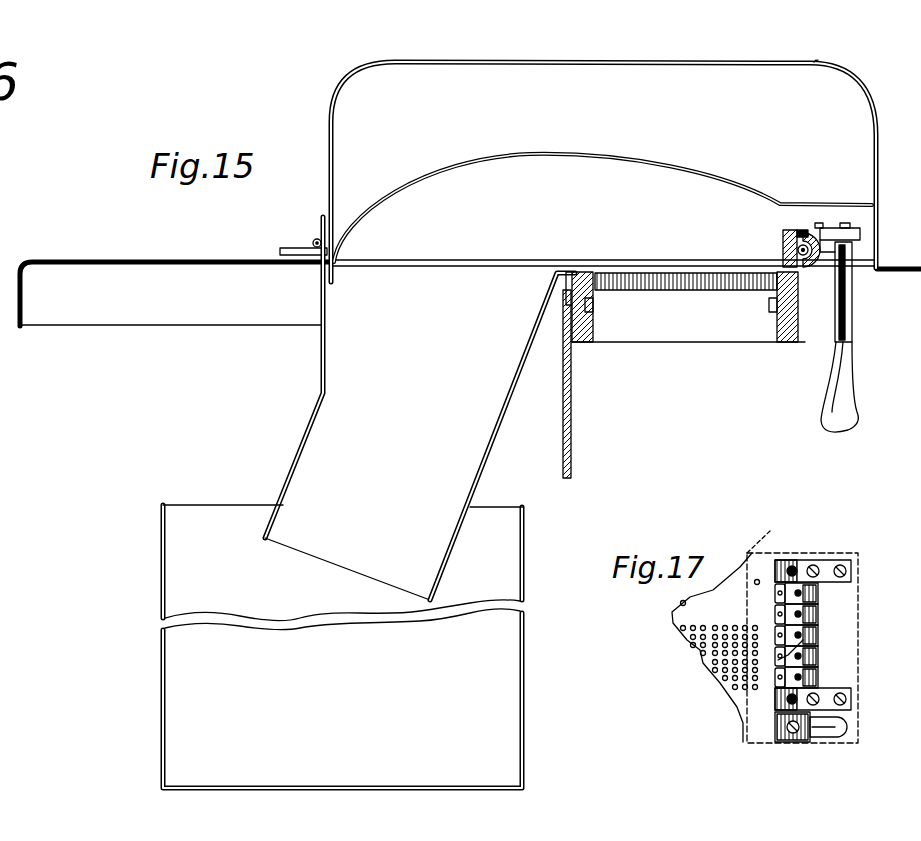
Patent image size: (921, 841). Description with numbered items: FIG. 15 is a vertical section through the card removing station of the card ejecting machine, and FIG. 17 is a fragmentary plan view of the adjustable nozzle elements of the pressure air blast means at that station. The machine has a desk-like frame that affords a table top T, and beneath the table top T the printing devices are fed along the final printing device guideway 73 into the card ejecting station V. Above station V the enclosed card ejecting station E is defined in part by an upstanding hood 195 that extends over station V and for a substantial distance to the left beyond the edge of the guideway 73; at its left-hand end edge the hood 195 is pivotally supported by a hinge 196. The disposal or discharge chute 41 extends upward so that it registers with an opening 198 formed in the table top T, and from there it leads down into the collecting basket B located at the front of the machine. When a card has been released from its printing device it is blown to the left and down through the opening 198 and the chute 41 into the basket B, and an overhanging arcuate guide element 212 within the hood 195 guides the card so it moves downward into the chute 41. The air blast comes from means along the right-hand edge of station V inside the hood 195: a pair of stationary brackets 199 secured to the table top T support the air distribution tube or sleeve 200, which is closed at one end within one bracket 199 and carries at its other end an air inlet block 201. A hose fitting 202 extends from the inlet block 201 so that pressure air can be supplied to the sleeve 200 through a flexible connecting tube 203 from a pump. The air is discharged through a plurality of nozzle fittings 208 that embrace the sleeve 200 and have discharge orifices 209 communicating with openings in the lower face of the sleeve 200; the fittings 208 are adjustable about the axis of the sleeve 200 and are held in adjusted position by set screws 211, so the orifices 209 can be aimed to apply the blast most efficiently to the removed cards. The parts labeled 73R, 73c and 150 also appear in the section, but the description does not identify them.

In FIG. 15, the hood 195 is at (420, 62).
In FIG. 17, the hood 195 is at (765, 631).
In FIG. 15, the hinge 196 is at (313, 240).
In FIG. 15, the opening 198 is at (398, 262).
In FIG. 15, the overhanging arcuate guide element 212 is at (510, 158).
In FIG. 15, the discharge chute 41 is at (308, 419).
In FIG. 15, the final printing device guideway 73 is at (800, 344).
In FIG. 15, the switch housing block 73R is at (585, 270).
In FIG. 15, the contact 73c is at (589, 308).
In FIG. 15, the heating grid 150 is at (650, 272).
In FIG. 15, the nozzle fittings 208 is at (792, 230).
In FIG. 17, the nozzle fittings 208 is at (812, 611).
In FIG. 15, the discharge orifices 209 is at (796, 262).
In FIG. 17, the discharge orifices 209 is at (777, 612).
In FIG. 15, the air distribution tube or sleeve 200 is at (786, 240).
In FIG. 17, the air distribution tube or sleeve 200 is at (810, 638).
In FIG. 15, the hose fitting 202 is at (852, 262).
In FIG. 17, the hose fitting 202 is at (822, 740).
In FIG. 15, the flexible connecting tube 203 is at (822, 412).
In FIG. 17, the stationary brackets 199 is at (828, 565).
In FIG. 17, the air inlet block 201 is at (783, 730).
In FIG. 17, the set screws 211 is at (792, 658).
In FIG. 15, the table top T is at (125, 260).
In FIG. 15, the card ejecting station E is at (826, 61).
In FIG. 15, the collecting basket B is at (160, 578).
In FIG. 15, the card ejecting station V is at (678, 328).